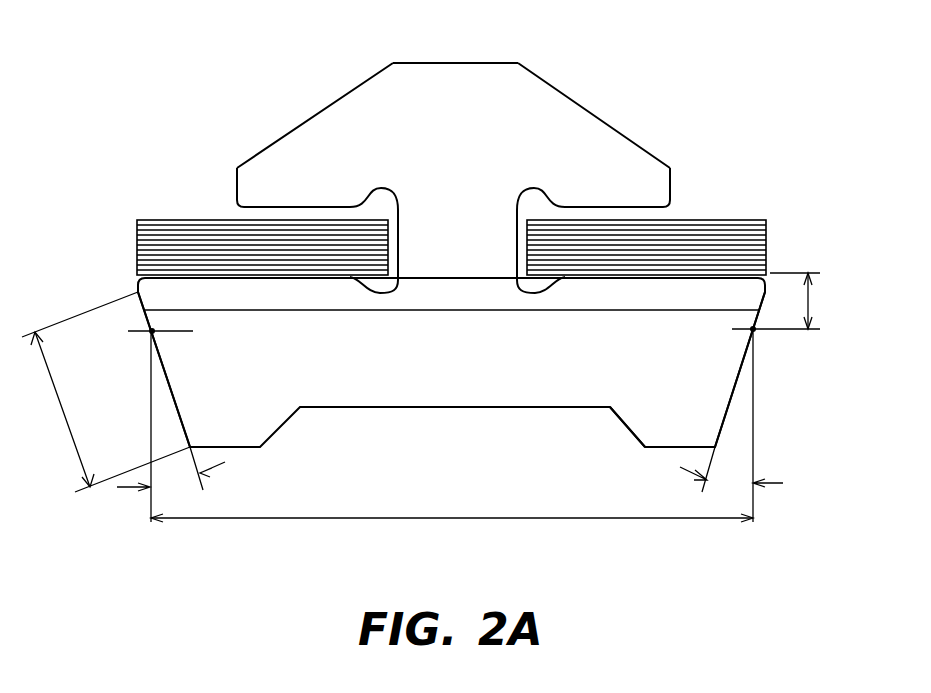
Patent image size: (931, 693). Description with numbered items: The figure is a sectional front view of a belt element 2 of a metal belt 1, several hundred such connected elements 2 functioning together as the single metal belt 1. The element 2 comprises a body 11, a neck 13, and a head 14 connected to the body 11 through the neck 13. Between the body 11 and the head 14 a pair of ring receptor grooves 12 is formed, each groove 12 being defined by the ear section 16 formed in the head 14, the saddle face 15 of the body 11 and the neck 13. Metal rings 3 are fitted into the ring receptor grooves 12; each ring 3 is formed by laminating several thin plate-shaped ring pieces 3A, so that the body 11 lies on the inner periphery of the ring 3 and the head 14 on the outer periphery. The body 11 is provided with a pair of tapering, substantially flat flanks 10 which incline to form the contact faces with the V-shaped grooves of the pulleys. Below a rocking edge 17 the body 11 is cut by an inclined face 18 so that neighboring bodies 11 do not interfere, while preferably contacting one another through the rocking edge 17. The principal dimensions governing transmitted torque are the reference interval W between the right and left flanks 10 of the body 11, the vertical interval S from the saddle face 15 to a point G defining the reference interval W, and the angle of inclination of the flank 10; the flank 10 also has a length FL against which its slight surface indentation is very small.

The metal belt 1 is at (224, 159).
The element 2 is at (647, 133).
The metal ring 3 is at (193, 213).
The ring piece 3A is at (155, 233).
The flank 10 is at (175, 410).
The body 11 is at (460, 380).
The ring receptor groove 12 is at (315, 215).
The neck 13 is at (440, 292).
The head 14 is at (453, 78).
The saddle face 15 is at (270, 258).
The ear section 16 is at (273, 163).
The rocking edge 17 is at (560, 310).
The inclined face 18 is at (451, 362).
The point defining the reference interval G is at (147, 333).
The reference interval W is at (452, 440).
The vertical interval S is at (802, 301).
The flank length FL is at (106, 392).